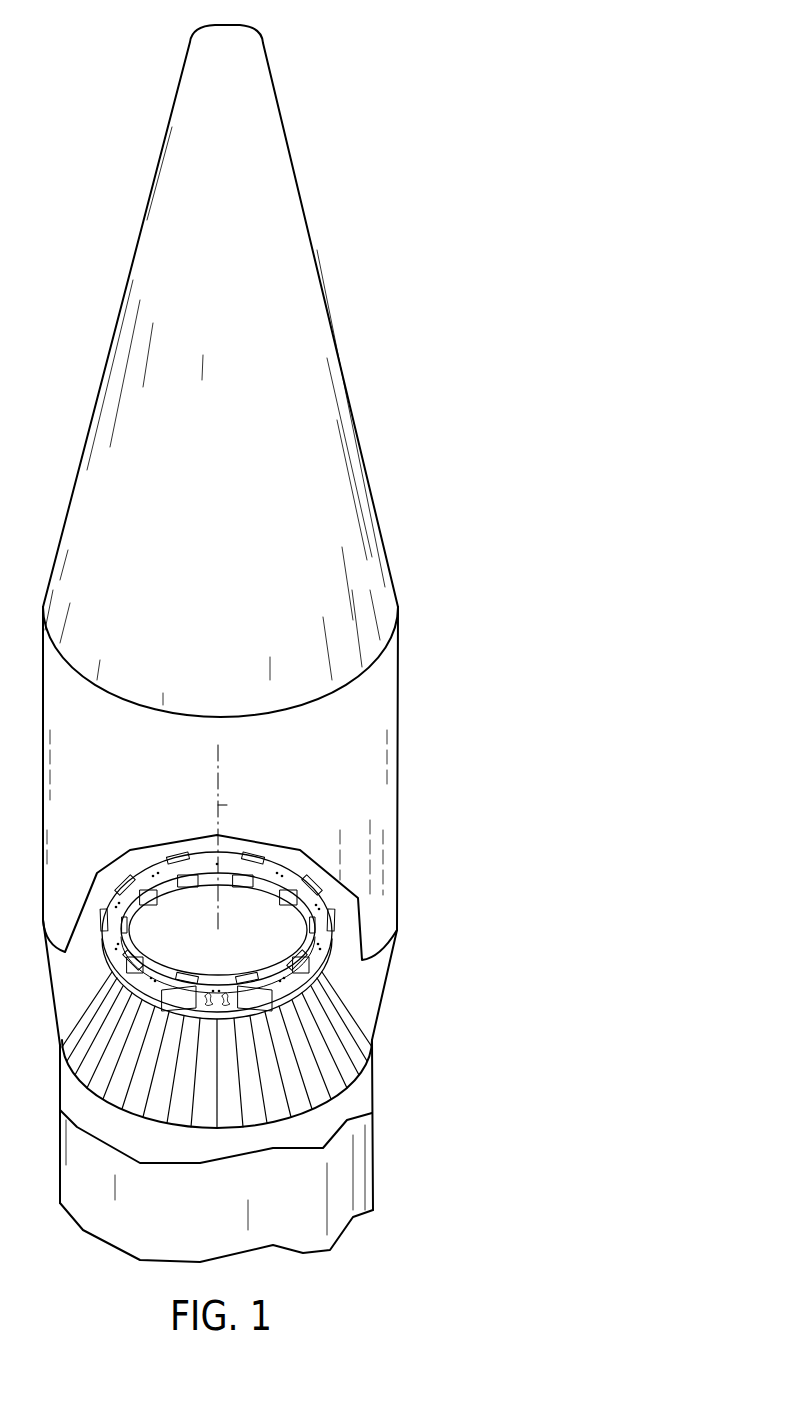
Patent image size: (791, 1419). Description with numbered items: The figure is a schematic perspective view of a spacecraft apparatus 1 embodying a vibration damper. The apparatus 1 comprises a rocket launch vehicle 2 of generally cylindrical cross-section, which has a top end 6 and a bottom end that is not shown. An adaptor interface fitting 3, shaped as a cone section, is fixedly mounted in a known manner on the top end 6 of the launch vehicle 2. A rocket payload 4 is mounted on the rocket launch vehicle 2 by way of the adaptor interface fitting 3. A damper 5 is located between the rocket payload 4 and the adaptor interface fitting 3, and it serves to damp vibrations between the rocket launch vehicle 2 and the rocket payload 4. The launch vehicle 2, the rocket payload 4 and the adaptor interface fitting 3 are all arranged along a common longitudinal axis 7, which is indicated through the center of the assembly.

The apparatus 1 is at (271, 595).
The rocket launch vehicle 2 is at (256, 1151).
The adaptor interface fitting 3 is at (378, 996).
The rocket payload 4 is at (355, 341).
The damper 5 is at (340, 898).
The top end 6 is at (363, 1098).
The longitudinal axis 7 is at (238, 797).